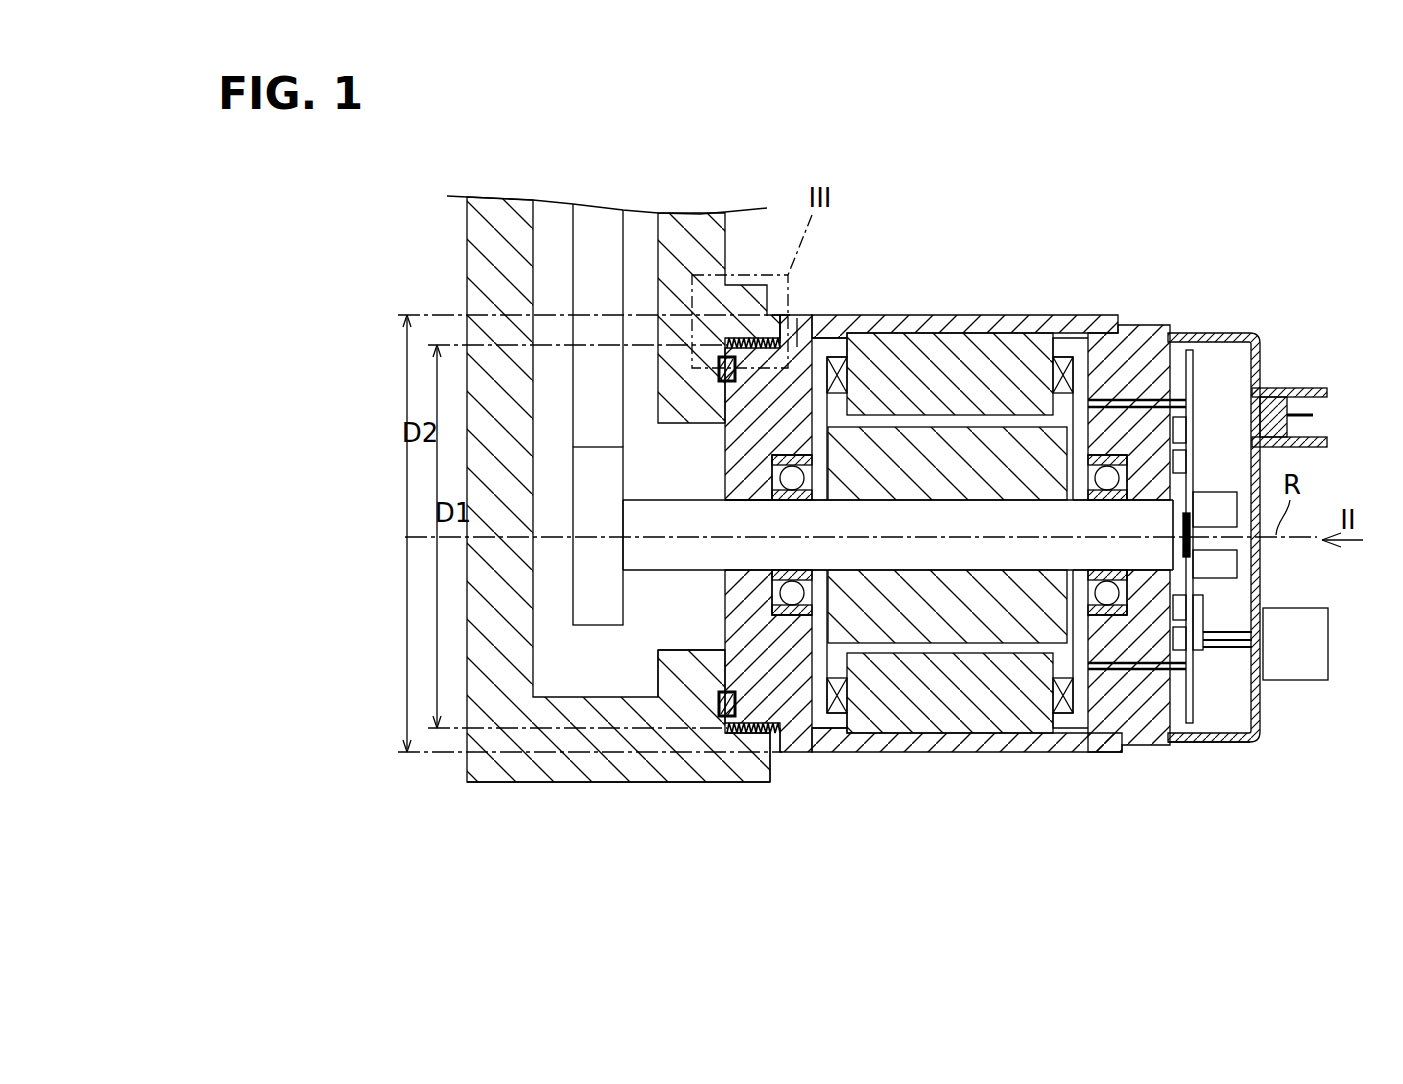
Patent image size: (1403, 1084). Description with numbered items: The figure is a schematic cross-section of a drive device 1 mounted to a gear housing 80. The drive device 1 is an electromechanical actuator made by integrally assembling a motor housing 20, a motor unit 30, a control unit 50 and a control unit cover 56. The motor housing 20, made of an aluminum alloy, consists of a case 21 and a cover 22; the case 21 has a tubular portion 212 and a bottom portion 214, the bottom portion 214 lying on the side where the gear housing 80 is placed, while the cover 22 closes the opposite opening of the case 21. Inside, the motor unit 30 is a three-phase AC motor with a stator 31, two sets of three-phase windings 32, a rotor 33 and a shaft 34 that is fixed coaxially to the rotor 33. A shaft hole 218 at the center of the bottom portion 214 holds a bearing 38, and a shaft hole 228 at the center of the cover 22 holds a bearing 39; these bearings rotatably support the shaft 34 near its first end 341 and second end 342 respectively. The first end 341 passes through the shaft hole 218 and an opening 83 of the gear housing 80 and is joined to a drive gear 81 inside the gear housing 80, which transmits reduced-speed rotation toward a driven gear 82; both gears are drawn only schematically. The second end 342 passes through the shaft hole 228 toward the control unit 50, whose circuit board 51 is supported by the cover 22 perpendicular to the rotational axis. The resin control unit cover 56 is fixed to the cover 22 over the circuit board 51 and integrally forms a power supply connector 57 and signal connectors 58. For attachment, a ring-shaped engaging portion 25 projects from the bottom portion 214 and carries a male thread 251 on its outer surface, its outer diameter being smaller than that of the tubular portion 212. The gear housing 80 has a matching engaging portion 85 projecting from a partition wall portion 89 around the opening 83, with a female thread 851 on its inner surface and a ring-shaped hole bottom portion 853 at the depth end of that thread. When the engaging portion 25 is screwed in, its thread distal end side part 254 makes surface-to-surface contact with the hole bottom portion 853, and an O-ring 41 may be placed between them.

The drive device 1 is at (1250, 282).
The motor housing 20 is at (983, 536).
The case 21 is at (1082, 742).
The cover 22 is at (1072, 815).
The engaging portion 25 is at (772, 283).
The motor unit 30 is at (958, 529).
The stator 31 is at (1030, 700).
The three-phase windings 32 is at (1063, 357).
The rotor 33 is at (888, 433).
The shaft 34 is at (913, 406).
The bearing 38 is at (800, 607).
The bearing 39 is at (1118, 457).
The O-ring 41 is at (733, 358).
The control unit 50 is at (1218, 758).
The circuit board 51 is at (1193, 368).
The control unit cover 56 is at (1190, 745).
The power supply connector 57 is at (1293, 387).
The signal connectors 58 is at (1297, 668).
The gear housing 80 is at (488, 762).
The drive gear 81 is at (590, 490).
The driven gear 82 is at (583, 287).
The opening 83 is at (692, 652).
The engaging portion 85 is at (757, 765).
The partition wall portion 89 is at (573, 770).
The tubular portion 212 is at (1030, 320).
The bottom portion 214 is at (798, 318).
The shaft hole 218 is at (757, 510).
The shaft hole 228 is at (1195, 550).
The male thread 251 is at (753, 390).
The thread distal end side part 254 is at (722, 668).
The first end 341 is at (636, 530).
The second end 342 is at (1147, 520).
The female thread 851 is at (775, 718).
The hole bottom portion 853 is at (692, 672).